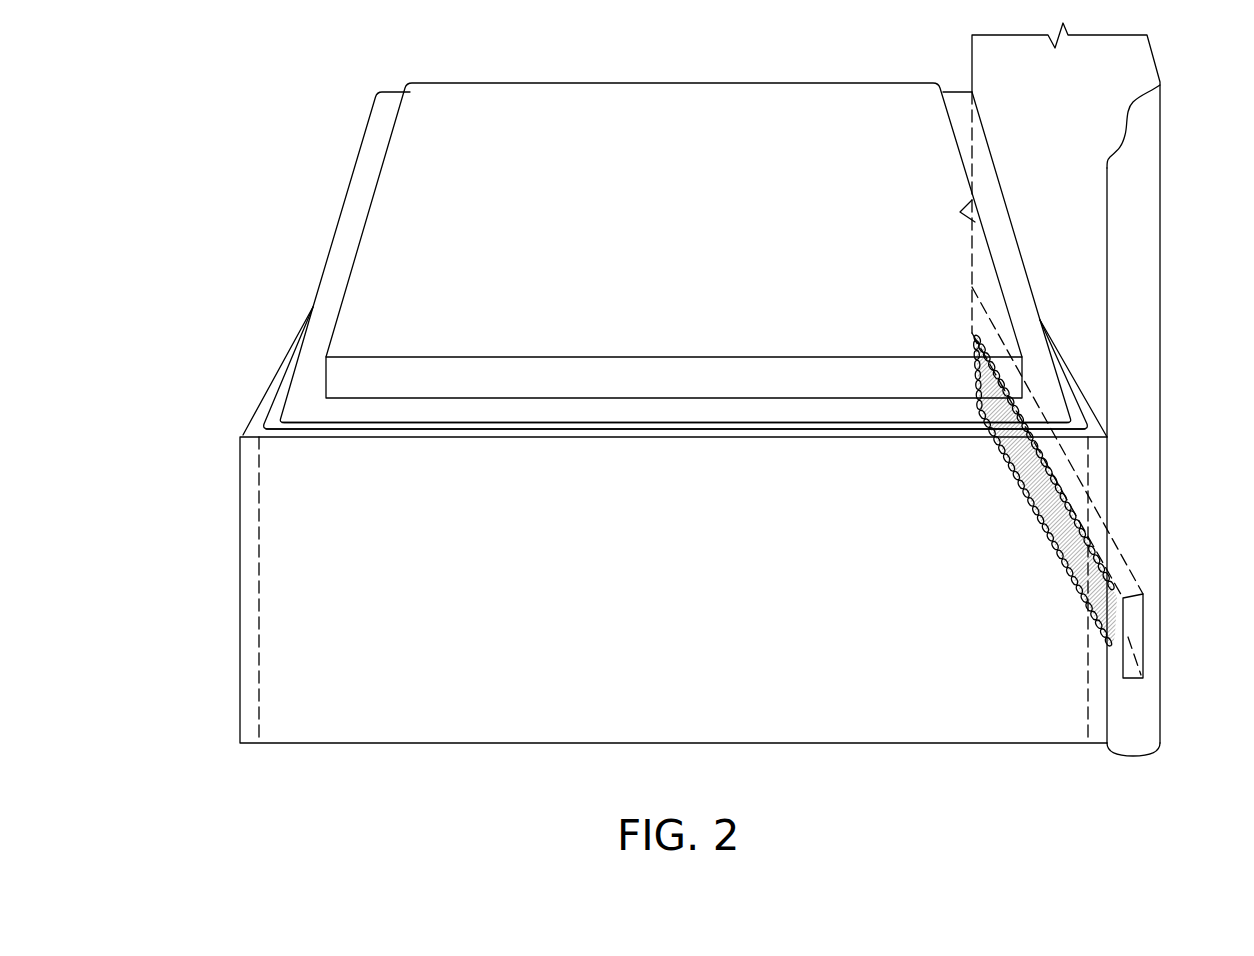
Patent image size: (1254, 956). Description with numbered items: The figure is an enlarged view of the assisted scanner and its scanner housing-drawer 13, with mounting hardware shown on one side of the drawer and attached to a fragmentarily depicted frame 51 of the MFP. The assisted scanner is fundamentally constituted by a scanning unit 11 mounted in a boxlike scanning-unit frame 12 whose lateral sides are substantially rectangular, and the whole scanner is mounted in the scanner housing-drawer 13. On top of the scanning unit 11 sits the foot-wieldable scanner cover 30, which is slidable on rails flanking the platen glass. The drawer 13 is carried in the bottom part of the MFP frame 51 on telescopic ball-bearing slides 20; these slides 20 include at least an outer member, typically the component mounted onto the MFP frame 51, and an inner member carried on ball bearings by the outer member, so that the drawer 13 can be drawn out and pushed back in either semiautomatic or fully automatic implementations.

The scanning unit 11 is at (343, 206).
The scanning-unit frame 12 is at (290, 587).
The scanner housing-drawer 13 is at (250, 435).
The telescopic ball-bearing slides 20 is at (1128, 610).
The scanner cover 30 is at (690, 239).
The MFP frame 51 is at (1137, 368).